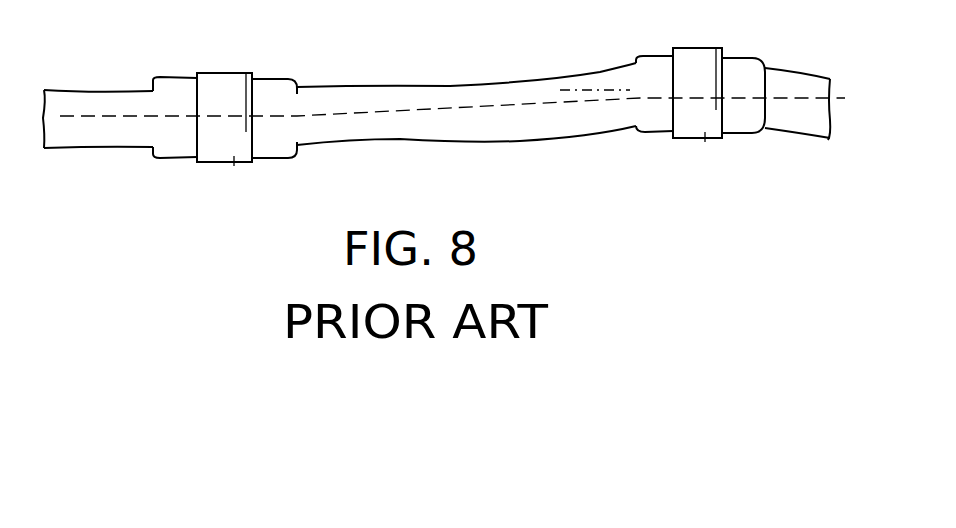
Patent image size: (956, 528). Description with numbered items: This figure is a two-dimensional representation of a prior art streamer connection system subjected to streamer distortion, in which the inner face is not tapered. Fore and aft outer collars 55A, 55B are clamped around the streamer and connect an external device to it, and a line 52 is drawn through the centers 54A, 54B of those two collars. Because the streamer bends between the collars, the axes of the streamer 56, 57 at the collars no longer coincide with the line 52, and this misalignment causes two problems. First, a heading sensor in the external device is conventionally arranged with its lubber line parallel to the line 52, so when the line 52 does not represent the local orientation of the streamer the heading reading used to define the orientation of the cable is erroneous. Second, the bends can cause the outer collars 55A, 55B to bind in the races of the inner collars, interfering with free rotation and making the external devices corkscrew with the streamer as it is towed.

The line passing through the collar centers 52 is at (382, 110).
The center of fore outer collar 54A is at (218, 122).
The center of aft outer collar 54B is at (695, 97).
The fore outer collar 55A is at (234, 158).
The aft outer collar 55B is at (705, 134).
The streamer 56 is at (95, 103).
The streamer 57 is at (776, 98).